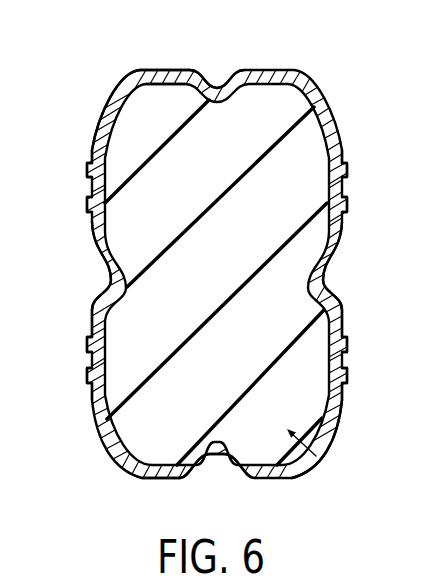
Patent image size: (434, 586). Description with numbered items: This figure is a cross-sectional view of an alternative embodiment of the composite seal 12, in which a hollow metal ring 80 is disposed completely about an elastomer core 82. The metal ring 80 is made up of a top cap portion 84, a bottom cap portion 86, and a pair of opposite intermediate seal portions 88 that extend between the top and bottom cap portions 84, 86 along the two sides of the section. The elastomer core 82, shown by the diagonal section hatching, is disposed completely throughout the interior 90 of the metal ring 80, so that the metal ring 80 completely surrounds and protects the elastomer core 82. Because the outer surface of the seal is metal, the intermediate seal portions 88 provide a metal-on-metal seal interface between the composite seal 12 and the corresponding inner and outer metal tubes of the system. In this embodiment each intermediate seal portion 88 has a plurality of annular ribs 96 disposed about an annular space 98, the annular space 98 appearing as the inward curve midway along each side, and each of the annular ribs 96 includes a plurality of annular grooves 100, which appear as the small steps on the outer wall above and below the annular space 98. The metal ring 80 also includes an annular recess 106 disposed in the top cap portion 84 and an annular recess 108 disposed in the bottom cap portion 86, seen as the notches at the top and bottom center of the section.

The composite seal 12 is at (297, 50).
The hollow metal ring 80 is at (323, 85).
The elastomer core 82 is at (318, 458).
The top cap portion 84 is at (158, 76).
The bottom cap portion 86 is at (155, 478).
The intermediate seal portions 88 is at (94, 408).
The interior 90 is at (153, 100).
The annular ribs 96 is at (90, 148).
The annular space 98 is at (110, 272).
The annular grooves 100 is at (88, 183).
The annular recess 106 is at (218, 86).
The annular recess 108 is at (236, 466).